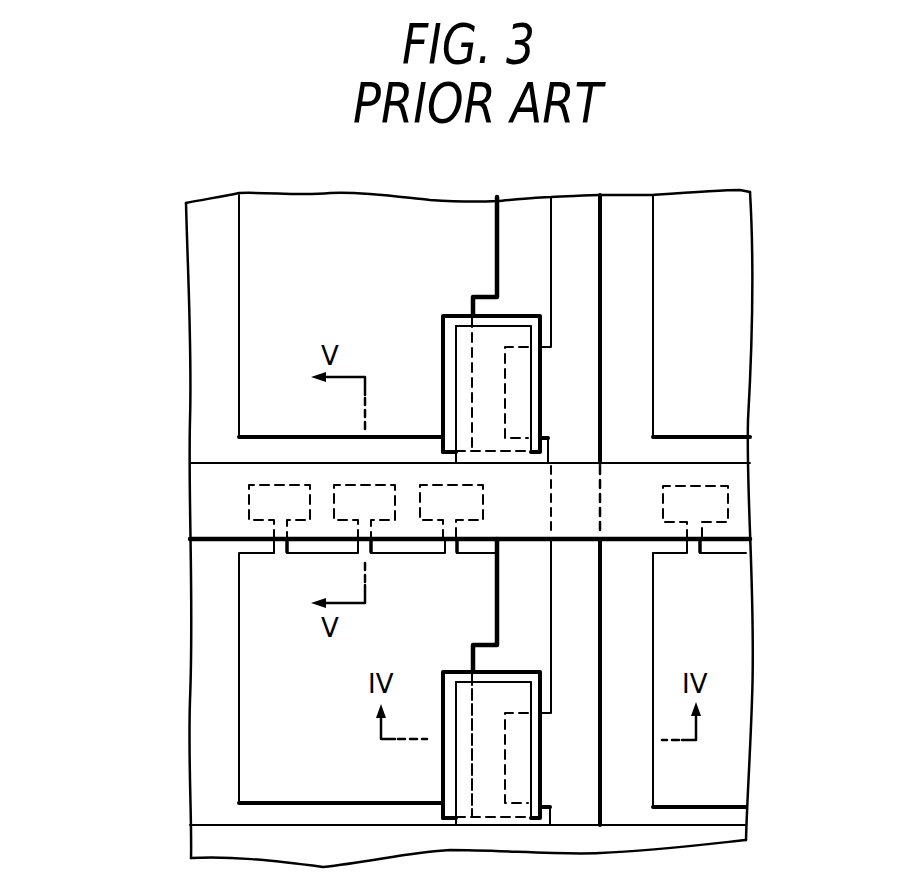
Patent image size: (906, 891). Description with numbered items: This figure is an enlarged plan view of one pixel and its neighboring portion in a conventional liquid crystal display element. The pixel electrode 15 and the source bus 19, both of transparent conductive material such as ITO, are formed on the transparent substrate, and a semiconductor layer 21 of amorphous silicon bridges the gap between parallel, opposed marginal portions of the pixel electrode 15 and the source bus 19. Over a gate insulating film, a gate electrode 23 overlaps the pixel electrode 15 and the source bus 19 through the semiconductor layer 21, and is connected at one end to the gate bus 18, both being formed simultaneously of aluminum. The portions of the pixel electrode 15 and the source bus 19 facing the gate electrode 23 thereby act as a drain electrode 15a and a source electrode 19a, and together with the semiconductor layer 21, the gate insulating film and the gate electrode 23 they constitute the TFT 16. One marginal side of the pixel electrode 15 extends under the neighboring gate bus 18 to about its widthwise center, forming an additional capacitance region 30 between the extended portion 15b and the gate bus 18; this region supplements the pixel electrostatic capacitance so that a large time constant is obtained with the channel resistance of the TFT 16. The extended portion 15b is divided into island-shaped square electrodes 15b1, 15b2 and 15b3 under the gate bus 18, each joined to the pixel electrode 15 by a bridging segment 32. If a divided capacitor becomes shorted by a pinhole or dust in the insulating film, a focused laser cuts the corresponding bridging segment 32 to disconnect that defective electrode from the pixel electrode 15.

The pixel electrode 15 is at (245, 717).
The drain electrode 15a is at (462, 770).
The extended portion 15b is at (102, 385).
The square electrode 15b1 is at (251, 487).
The square electrode 15b2 is at (430, 485).
The square electrode 15b3 is at (343, 485).
The TFT 16 is at (466, 652).
The gate bus 18 is at (738, 482).
The source bus 19 is at (592, 611).
The source electrode 19a is at (525, 760).
The semiconductor layer 21 is at (512, 673).
The gate electrode 23 is at (458, 343).
The additional capacitance region 30 is at (238, 508).
The bridging segment 32 is at (272, 550).